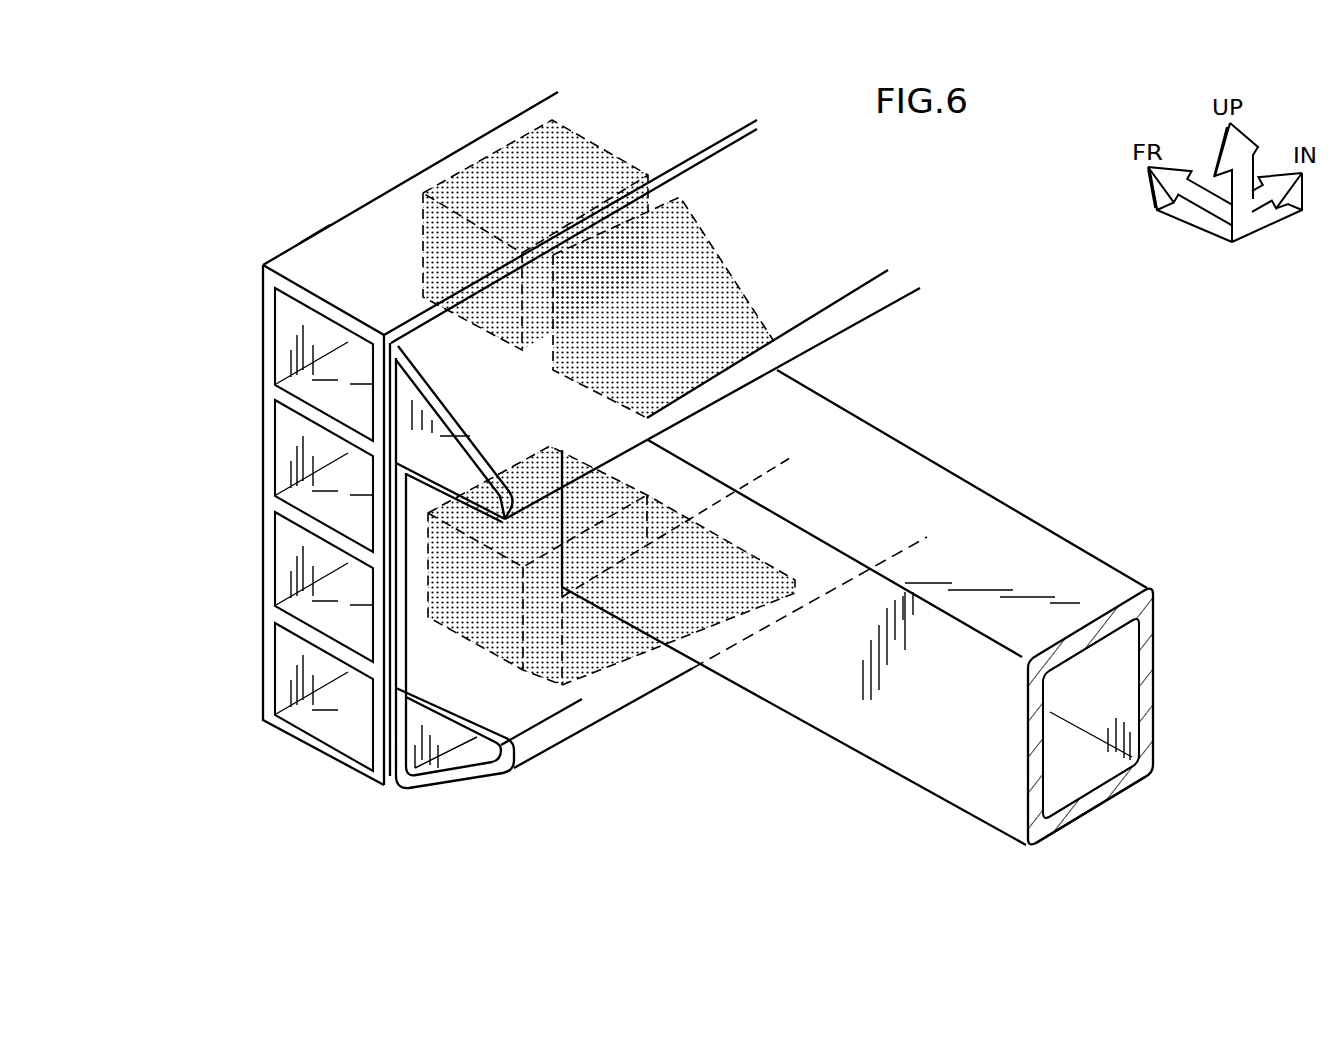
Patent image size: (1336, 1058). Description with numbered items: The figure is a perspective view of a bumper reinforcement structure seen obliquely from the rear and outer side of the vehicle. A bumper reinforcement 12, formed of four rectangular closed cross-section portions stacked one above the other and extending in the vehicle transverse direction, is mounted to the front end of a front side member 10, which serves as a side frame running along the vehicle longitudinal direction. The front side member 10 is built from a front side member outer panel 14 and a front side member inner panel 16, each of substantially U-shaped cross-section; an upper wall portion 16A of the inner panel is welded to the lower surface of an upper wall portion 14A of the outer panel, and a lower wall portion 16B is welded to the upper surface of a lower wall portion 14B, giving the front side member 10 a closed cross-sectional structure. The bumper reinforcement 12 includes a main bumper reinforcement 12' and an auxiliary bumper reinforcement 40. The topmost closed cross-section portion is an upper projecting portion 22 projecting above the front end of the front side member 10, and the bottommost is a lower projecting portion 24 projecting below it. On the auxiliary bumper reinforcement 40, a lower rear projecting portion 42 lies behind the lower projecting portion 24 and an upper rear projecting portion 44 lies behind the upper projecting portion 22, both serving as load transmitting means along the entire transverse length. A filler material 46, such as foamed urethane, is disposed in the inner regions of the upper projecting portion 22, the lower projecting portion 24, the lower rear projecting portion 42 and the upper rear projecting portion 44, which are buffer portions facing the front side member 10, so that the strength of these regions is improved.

The front side member 10 is at (1218, 517).
The bumper reinforcement 12 is at (510, 438).
The main bumper reinforcement 12' is at (289, 217).
The front side member outer panel 14 is at (1098, 570).
The upper wall portion of the front side member outer panel 14A is at (950, 492).
The lower wall portion of the front side member outer panel 14B is at (1120, 808).
The front side member inner panel 16 is at (1162, 655).
The upper wall portion of the front side member inner panel 16A is at (1092, 660).
The lower wall portion of the front side member inner panel 16B is at (1080, 805).
The upper projecting portion 22 is at (262, 342).
The lower projecting portion 24 is at (262, 677).
The auxiliary bumper reinforcement 40 is at (440, 643).
The lower rear projecting portion 42 is at (537, 764).
The upper rear projecting portion 44 is at (497, 446).
The filler material 46 is at (694, 220).